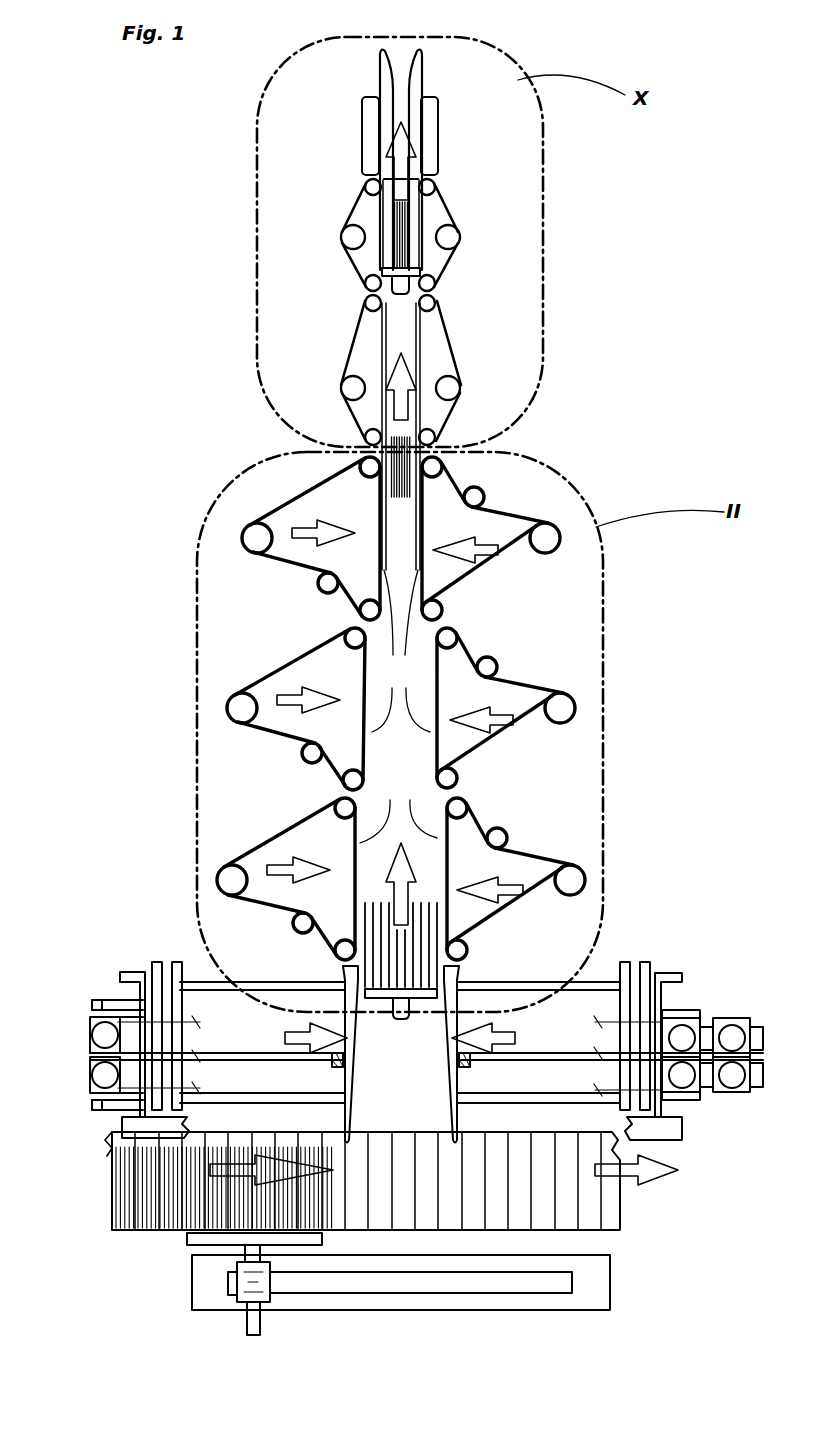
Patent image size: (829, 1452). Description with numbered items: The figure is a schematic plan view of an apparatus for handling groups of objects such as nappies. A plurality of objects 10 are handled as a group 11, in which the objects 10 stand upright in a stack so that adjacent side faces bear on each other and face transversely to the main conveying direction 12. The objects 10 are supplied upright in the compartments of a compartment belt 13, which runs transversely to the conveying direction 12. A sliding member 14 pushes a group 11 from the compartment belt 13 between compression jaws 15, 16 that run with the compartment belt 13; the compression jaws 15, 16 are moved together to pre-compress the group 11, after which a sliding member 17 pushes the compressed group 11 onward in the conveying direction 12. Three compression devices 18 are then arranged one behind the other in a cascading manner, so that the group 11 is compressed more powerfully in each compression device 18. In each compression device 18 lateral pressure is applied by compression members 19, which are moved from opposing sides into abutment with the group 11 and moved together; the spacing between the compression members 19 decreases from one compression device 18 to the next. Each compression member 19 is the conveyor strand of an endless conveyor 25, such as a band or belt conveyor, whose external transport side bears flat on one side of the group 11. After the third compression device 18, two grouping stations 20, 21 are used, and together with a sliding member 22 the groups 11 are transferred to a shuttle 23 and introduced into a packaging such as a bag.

The object 10 is at (135, 1188).
The group 11 is at (401, 222).
The conveying direction 12 is at (405, 404).
The compartment belt 13 is at (663, 1193).
The sliding member 14 is at (297, 1245).
The compression jaw 15 is at (343, 967).
The compression jaw 16 is at (460, 971).
The sliding member 17 is at (408, 1020).
The compression device 18 is at (554, 574).
The compression member 19 is at (398, 706).
The grouping station 20 is at (470, 336).
The grouping station 21 is at (476, 264).
The sliding member 22 is at (388, 268).
The shuttle 23 is at (440, 61).
The endless conveyor 25 is at (267, 495).